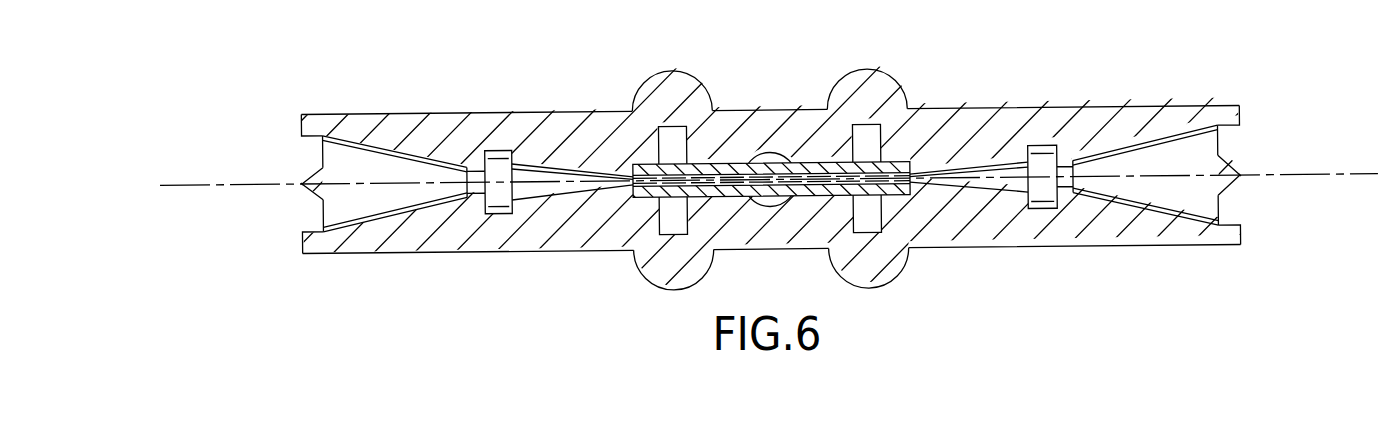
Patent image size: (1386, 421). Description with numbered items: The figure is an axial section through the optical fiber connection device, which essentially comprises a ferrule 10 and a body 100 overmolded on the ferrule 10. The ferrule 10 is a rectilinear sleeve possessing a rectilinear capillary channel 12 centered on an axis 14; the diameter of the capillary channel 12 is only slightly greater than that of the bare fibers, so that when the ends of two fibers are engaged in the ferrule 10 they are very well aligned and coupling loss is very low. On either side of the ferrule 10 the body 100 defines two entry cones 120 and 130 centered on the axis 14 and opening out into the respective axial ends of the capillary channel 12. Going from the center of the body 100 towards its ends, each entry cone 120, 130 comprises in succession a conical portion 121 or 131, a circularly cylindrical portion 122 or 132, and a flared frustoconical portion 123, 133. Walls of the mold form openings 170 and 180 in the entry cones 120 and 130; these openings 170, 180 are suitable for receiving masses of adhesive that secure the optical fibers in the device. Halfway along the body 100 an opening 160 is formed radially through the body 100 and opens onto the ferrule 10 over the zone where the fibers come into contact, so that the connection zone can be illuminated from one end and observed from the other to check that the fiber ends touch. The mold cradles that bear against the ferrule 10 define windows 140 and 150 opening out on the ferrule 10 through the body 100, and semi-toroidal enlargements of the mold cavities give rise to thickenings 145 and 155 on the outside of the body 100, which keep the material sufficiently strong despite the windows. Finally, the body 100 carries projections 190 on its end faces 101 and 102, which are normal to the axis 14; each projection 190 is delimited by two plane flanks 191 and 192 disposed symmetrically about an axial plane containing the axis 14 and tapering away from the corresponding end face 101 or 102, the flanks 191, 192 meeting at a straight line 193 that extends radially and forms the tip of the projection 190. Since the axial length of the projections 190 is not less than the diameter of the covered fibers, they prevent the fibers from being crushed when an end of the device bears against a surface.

The body 100 is at (948, 62).
The ferrule 10 is at (720, 193).
The capillary channel 12 is at (826, 182).
The axis 14 is at (198, 180).
The end face 101 is at (1224, 140).
The end face 102 is at (316, 145).
The entry cone 120 is at (1144, 165).
The conical portion 121 is at (997, 172).
The circularly cylindrical portion 122 is at (1066, 168).
The flared frustoconical portion 123 is at (1125, 192).
The entry cone 130 is at (394, 170).
The conical portion 131 is at (533, 175).
The circularly cylindrical portion 132 is at (476, 172).
The flared frustoconical portion 133 is at (410, 206).
The window 140 is at (903, 250).
The thickening 145 is at (870, 78).
The window 150 is at (636, 258).
The thickening 155 is at (678, 78).
The opening 160 is at (773, 152).
The opening 170 is at (1040, 203).
The opening 180 is at (492, 210).
The projection 190 is at (312, 119).
The plane flank 191 is at (302, 183).
The plane flank 192 is at (305, 192).
The straight line 193 is at (300, 186).